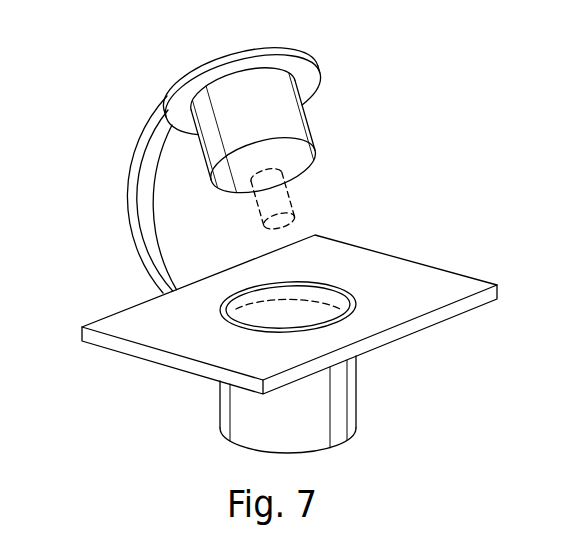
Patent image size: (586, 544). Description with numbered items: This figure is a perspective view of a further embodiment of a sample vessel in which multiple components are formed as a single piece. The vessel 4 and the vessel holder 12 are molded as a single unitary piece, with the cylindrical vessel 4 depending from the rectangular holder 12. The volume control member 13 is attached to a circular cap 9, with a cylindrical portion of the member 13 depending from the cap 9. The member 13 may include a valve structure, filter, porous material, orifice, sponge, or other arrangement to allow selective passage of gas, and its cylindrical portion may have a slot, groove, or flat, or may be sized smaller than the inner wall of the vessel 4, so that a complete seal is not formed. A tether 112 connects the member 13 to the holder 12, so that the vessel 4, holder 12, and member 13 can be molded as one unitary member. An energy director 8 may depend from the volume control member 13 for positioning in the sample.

The cap 9 is at (313, 87).
The volume control member 13 is at (300, 133).
The energy director 8 is at (282, 198).
The tether 112 is at (130, 225).
The vessel holder 12 is at (425, 280).
The vessel 4 is at (343, 400).